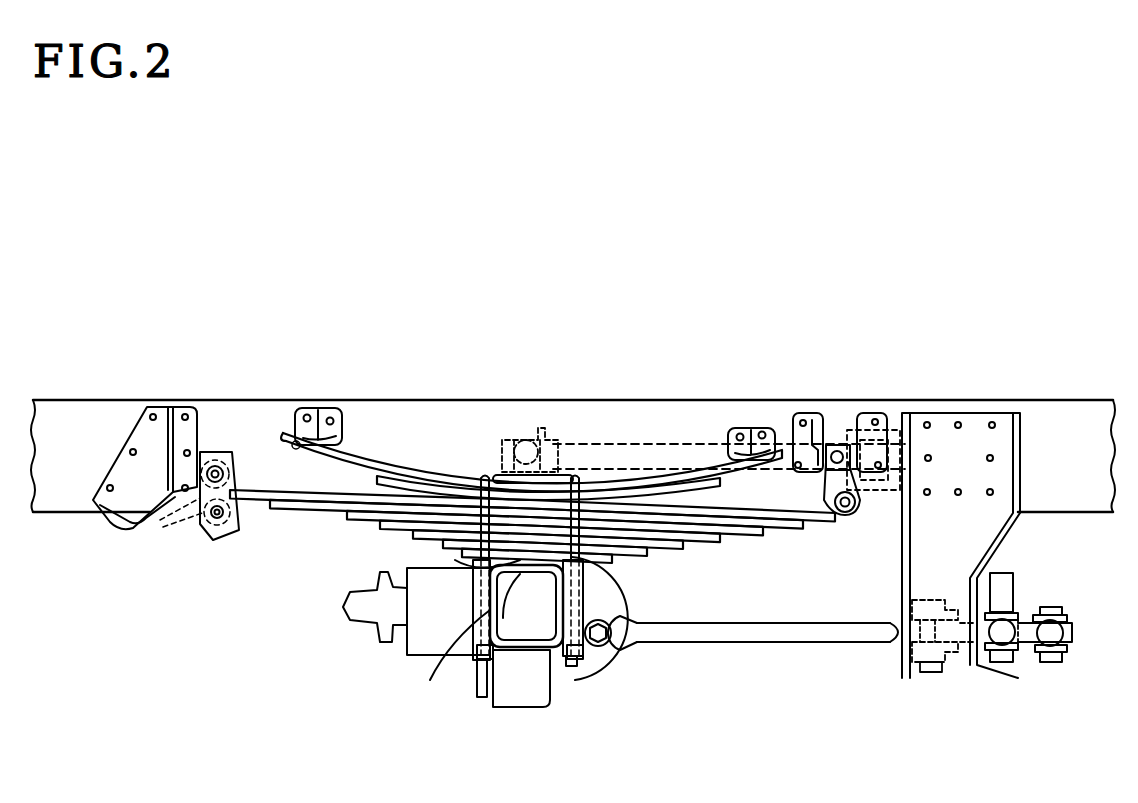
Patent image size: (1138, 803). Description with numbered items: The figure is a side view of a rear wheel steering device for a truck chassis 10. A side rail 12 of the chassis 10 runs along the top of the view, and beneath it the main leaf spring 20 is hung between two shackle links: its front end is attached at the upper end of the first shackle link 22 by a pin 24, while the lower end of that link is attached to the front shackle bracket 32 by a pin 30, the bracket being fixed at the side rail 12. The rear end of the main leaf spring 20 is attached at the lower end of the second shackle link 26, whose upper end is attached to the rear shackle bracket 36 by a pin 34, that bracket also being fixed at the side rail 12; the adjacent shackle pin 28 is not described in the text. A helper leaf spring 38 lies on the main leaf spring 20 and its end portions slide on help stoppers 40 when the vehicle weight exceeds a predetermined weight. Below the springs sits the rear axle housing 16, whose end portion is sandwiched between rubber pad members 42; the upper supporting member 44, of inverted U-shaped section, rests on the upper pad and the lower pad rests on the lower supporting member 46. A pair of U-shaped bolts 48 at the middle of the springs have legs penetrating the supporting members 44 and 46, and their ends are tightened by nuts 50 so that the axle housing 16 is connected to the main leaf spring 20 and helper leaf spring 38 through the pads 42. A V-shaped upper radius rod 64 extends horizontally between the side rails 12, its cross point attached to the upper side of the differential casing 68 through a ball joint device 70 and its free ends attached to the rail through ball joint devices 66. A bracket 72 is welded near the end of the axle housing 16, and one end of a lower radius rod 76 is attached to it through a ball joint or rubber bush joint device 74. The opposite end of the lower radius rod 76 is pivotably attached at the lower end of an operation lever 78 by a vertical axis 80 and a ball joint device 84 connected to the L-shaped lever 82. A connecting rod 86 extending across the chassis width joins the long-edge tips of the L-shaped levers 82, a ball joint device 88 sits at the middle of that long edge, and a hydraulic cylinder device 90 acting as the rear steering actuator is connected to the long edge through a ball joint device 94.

The chassis 10 is at (94, 396).
The side rail 12 is at (56, 495).
The rear axle housing 16 is at (519, 602).
The main leaf spring 20 is at (306, 526).
The first shackle link 22 is at (213, 540).
The pin 24 is at (215, 466).
The second shackle link 26 is at (816, 518).
The shackle bolt 28 is at (846, 513).
The pin 30 is at (210, 514).
The front shackle bracket 32 is at (128, 492).
The pin 34 is at (838, 450).
The rear shackle bracket 36 is at (797, 414).
The helper leaf spring 38 is at (375, 464).
The help stopper 40 is at (325, 418).
The rubber pad member 42 is at (500, 660).
The upper supporting member 44 is at (455, 562).
The lower supporting member 46 is at (470, 660).
The U-shaped bolt 48 is at (485, 478).
The nut 50 is at (568, 678).
The upper radius rod 64 is at (652, 455).
The ball joint device 66 is at (510, 438).
The differential casing 68 is at (570, 680).
The ball joint device or rubber bush joint device 70 is at (882, 492).
The bracket 72 is at (595, 645).
The ball joint or rubber bush joint device 74 is at (640, 615).
The lower radius rod 76 is at (735, 645).
The operation lever 78 is at (976, 523).
The vertical axis 80 is at (925, 680).
The L-shaped lever 82 is at (1072, 635).
The ball joint device 84 is at (960, 652).
The connecting rod 86 is at (1052, 612).
The ball joint device 88 is at (1050, 664).
The hydraulic cylinder device 90 is at (1020, 622).
The ball joint device 94 is at (1000, 665).